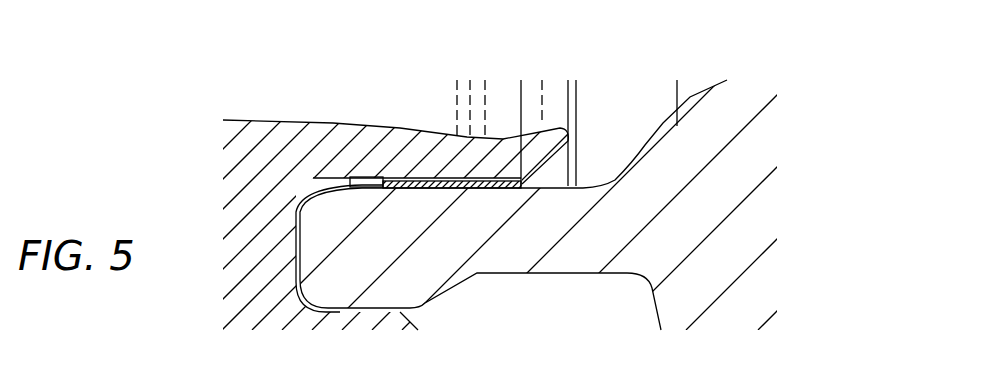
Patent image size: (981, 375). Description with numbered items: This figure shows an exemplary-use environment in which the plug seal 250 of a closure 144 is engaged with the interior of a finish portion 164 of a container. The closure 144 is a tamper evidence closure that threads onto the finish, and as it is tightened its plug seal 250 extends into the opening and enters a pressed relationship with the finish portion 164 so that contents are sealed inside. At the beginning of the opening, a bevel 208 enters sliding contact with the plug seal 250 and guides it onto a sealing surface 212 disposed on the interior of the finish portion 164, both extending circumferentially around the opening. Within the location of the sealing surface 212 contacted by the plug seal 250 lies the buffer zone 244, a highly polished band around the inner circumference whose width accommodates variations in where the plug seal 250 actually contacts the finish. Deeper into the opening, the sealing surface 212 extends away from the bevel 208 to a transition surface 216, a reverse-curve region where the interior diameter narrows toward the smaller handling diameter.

The finish portion 164 is at (778, 48).
The closure 144 is at (268, 313).
The bevel 208 is at (312, 187).
The sealing surface 212 is at (365, 183).
The buffer zone 244 is at (413, 180).
The plug seal 250 is at (500, 160).
The transition surface 216 is at (635, 140).